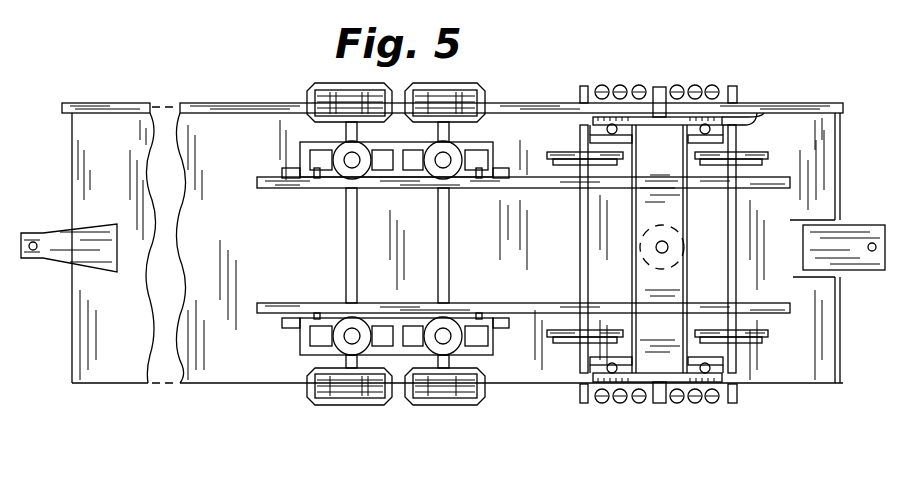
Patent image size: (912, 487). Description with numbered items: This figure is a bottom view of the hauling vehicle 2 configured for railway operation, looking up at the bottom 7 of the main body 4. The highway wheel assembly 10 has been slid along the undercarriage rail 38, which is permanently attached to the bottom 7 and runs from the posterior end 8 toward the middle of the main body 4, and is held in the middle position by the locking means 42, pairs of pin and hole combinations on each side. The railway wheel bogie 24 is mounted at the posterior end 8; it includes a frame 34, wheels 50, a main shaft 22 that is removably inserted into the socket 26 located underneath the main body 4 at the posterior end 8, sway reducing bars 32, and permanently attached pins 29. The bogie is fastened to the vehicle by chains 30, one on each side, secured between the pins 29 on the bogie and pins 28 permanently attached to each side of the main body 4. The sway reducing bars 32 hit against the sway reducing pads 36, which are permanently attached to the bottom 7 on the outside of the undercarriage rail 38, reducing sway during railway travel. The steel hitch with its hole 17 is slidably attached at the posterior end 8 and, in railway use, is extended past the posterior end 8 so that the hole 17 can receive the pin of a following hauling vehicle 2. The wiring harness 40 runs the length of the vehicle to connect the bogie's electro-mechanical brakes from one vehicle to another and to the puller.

The hauling vehicle 2 is at (160, 85).
The main body 4 is at (200, 112).
The bottom 7 is at (838, 146).
The posterior end 8 is at (840, 170).
The highway wheel assembly 10 is at (302, 150).
The hole 17 is at (868, 244).
The main shaft 22 is at (670, 247).
The railway wheel bogie 24 is at (768, 334).
The socket 26 is at (680, 268).
The pins 28 is at (595, 68).
The pins 29 is at (658, 87).
The chains 30 is at (640, 85).
The sway reducing bars 32 is at (690, 130).
The frame 34 is at (653, 203).
The sway reducing pads 36 is at (598, 120).
The undercarriage rail 38 is at (294, 186).
The wiring harness 40 is at (103, 110).
The locking means 42 is at (317, 188).
The wheels 50 is at (560, 155).